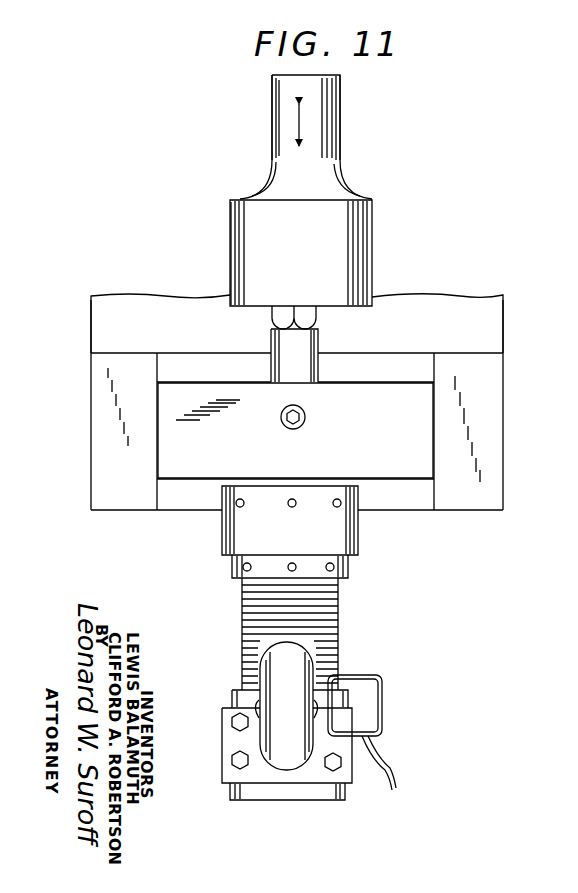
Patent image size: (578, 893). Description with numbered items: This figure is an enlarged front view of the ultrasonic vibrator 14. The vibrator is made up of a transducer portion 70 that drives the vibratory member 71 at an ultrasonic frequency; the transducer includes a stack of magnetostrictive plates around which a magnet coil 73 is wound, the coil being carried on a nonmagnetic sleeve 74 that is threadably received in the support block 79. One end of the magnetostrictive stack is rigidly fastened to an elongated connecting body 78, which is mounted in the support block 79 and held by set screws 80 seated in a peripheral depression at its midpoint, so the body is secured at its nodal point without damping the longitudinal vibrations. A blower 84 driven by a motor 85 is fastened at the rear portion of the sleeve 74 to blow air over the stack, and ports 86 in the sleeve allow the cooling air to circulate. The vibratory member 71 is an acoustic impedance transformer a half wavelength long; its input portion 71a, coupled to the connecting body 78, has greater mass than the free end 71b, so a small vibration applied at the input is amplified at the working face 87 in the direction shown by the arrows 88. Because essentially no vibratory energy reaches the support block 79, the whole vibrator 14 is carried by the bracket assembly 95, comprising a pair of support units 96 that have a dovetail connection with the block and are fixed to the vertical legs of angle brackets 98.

The ultrasonic vibrator 14 is at (230, 237).
The transducer portion 70 is at (341, 615).
The vibratory member 71 is at (343, 170).
The input end portion 71a is at (356, 245).
The free end 71b is at (282, 165).
The magnet coil 73 is at (340, 656).
The nonmagnetic sleeve 74 is at (359, 551).
The connecting body 78 is at (319, 334).
The support block 79 is at (422, 430).
The set screws 80 is at (306, 421).
The blower 84 is at (272, 683).
The motor 85 is at (375, 710).
The ports 86 is at (290, 509).
The working face 87 is at (322, 75).
The arrows 88 is at (302, 123).
The bracket assembly 95 is at (86, 401).
The support units 96 is at (490, 381).
The angle brackets 98 is at (490, 283).